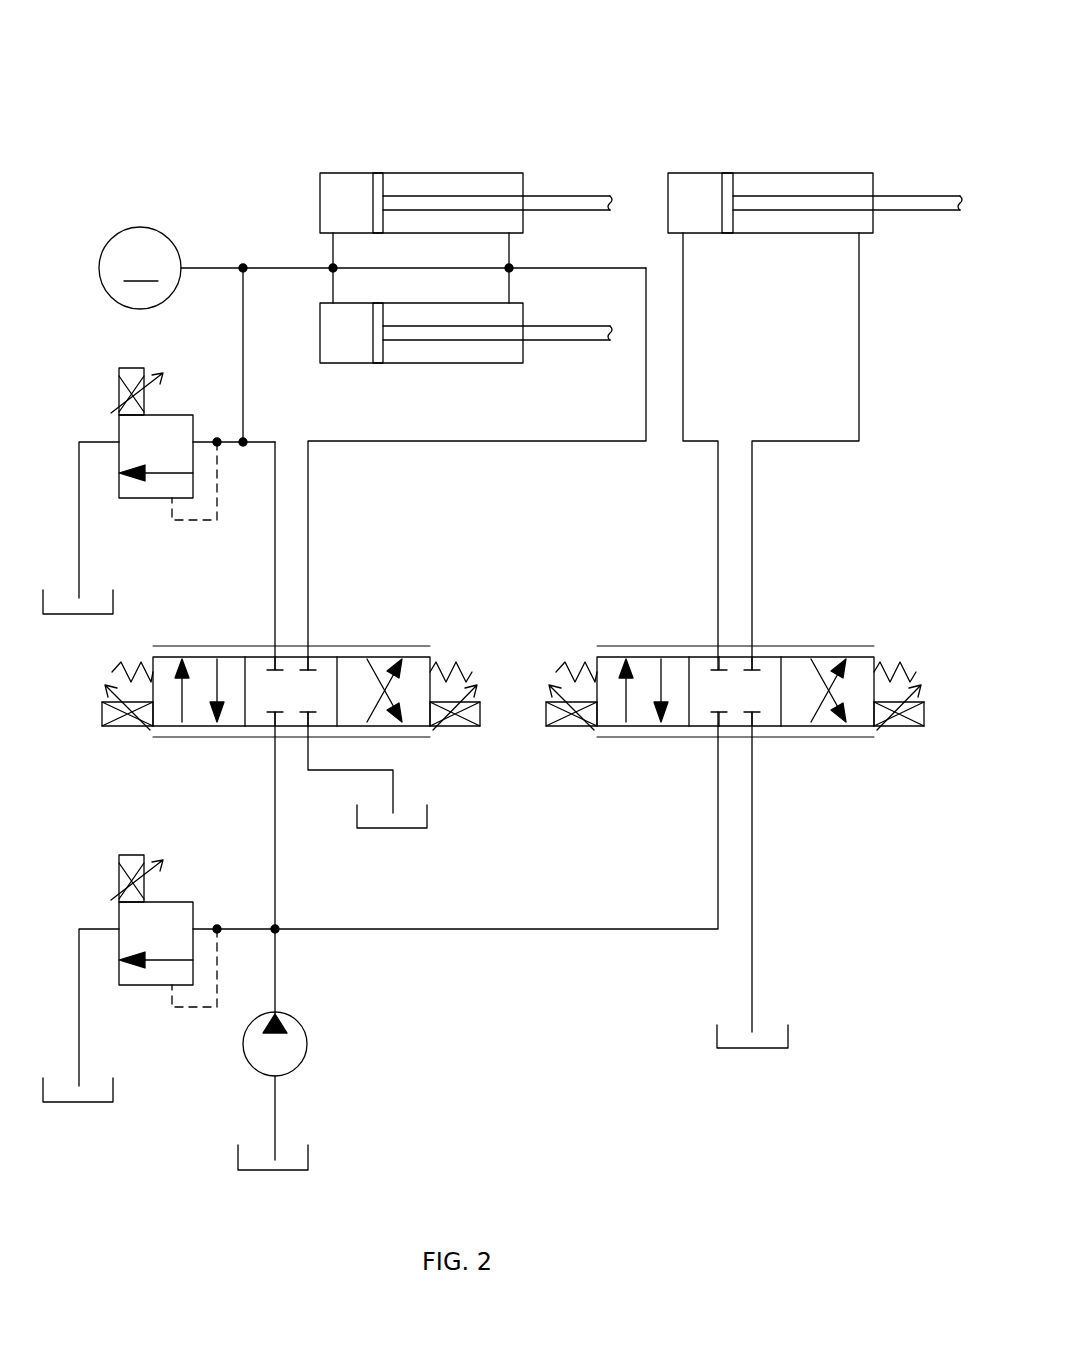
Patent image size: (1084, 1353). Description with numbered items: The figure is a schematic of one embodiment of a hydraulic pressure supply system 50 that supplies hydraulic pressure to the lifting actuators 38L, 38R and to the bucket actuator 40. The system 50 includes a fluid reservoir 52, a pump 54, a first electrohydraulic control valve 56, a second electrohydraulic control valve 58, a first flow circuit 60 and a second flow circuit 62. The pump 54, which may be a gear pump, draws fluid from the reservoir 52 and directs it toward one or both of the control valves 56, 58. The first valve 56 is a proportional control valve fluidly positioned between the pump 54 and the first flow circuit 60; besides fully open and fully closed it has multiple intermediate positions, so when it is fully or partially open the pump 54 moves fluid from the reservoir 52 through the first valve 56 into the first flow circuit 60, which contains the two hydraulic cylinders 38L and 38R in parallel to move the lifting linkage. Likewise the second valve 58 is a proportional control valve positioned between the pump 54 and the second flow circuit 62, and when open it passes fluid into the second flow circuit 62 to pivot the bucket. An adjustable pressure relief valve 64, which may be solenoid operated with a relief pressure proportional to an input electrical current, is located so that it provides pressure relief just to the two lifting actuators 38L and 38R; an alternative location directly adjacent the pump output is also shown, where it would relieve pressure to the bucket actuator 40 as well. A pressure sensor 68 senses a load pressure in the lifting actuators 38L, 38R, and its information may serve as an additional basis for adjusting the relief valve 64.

The hydraulic pressure supply system 50 is at (701, 77).
The lifting actuator 38L is at (418, 173).
The lifting actuator 38R is at (430, 365).
The bucket actuator 40 is at (690, 173).
The pressure sensor 68 is at (372, 268).
The adjustable pressure relief valve 64 is at (176, 415).
The first electrohydraulic control valve 56 is at (200, 726).
The second electrohydraulic control valve 58 is at (644, 726).
The pump 54 is at (304, 1025).
The fluid reservoir 52 is at (113, 600).
The first flow circuit 60 is at (410, 457).
The second flow circuit 62 is at (693, 465).